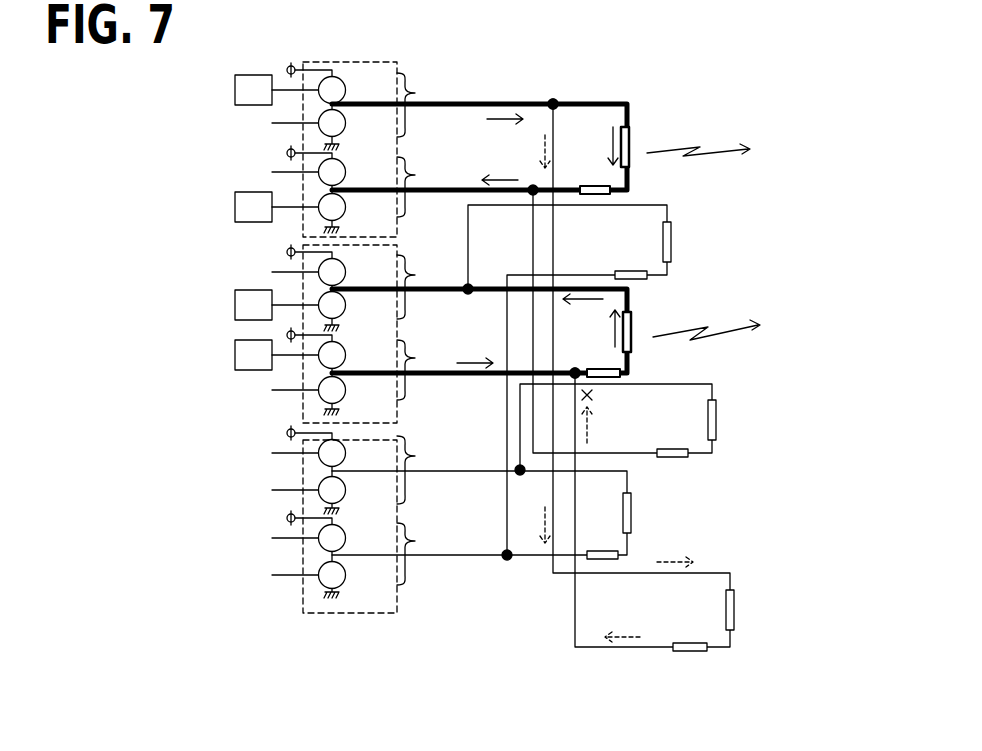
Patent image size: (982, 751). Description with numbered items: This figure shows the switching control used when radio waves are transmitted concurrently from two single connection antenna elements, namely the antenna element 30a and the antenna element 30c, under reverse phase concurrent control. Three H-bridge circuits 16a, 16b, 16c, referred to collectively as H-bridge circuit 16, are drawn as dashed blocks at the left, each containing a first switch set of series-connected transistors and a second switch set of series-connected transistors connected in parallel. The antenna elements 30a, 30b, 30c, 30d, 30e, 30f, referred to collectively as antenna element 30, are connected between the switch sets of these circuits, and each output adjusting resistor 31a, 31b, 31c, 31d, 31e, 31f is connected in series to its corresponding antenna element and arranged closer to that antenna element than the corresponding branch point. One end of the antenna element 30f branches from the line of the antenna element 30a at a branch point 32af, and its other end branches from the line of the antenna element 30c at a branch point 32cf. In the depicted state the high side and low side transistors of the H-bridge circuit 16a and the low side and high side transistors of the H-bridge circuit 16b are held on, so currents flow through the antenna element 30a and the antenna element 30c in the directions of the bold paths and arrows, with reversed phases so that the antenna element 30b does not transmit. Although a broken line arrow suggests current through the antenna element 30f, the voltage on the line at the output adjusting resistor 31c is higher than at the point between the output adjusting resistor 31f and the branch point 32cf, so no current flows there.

The H-bridge circuit 16 is at (376, 322).
The first H-bridge circuit 16a is at (396, 63).
The second H-bridge circuit 16b is at (398, 335).
The third H-bridge circuit 16c is at (398, 601).
The antenna element 30 is at (582, 373).
The antenna element 30a is at (629, 141).
The antenna element 30b is at (671, 240).
The antenna element 30c is at (632, 323).
The antenna element 30d is at (716, 415).
The antenna element 30e is at (632, 511).
The antenna element 30f is at (735, 604).
The output adjusting resistor 31a is at (584, 185).
The output adjusting resistor 31b is at (618, 270).
The output adjusting resistor 31c is at (622, 370).
The output adjusting resistor 31d is at (690, 437).
The output adjusting resistor 31e is at (612, 550).
The output adjusting resistor 31f is at (700, 630).
The branch point 32af is at (556, 100).
The branch point 32cf is at (582, 355).